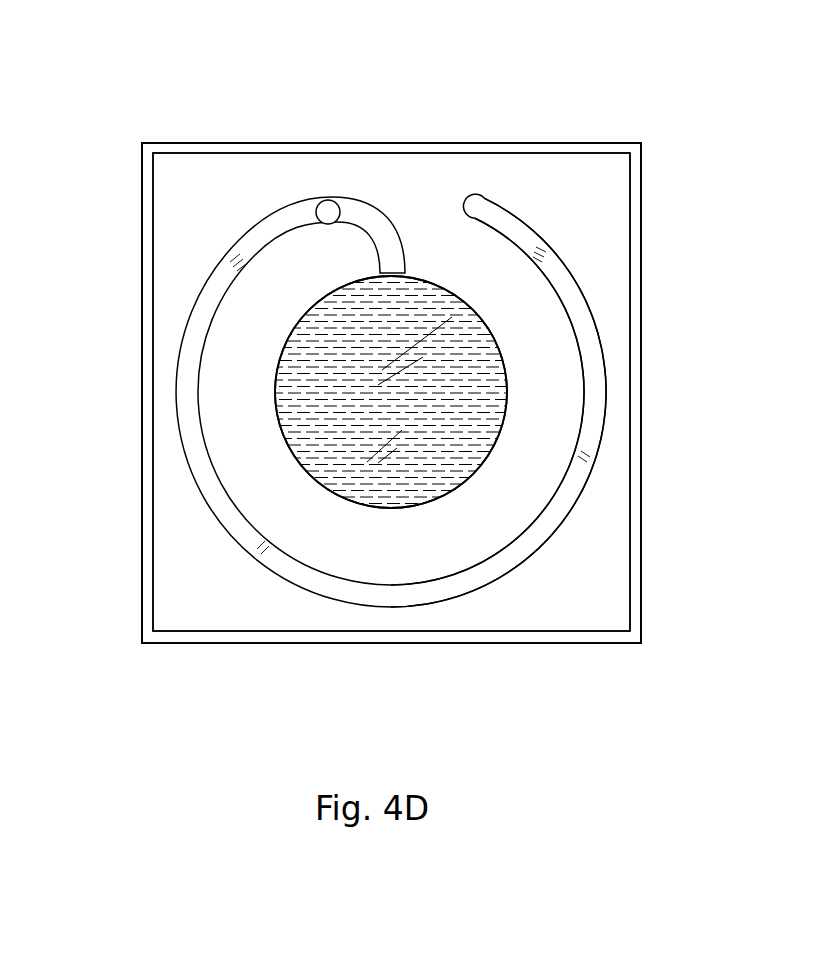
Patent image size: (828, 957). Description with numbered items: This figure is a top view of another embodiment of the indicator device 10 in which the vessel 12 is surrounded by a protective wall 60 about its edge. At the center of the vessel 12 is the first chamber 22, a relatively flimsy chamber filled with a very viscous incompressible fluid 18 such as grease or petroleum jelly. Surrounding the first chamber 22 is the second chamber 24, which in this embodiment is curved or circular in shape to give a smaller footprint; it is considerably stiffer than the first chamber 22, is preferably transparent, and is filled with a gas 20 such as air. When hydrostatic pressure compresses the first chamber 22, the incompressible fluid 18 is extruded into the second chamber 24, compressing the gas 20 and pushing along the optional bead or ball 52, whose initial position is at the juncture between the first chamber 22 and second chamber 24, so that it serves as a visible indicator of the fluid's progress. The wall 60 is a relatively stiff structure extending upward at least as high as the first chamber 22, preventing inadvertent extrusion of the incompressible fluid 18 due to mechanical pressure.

The indicator device 10 is at (122, 82).
The vessel 12 is at (427, 240).
The incompressible fluid 18 is at (437, 420).
The gas 20 is at (178, 433).
The first chamber 22 is at (282, 343).
The second chamber 24 is at (603, 349).
The bead or ball 52 is at (340, 207).
The protective wall 60 is at (142, 227).